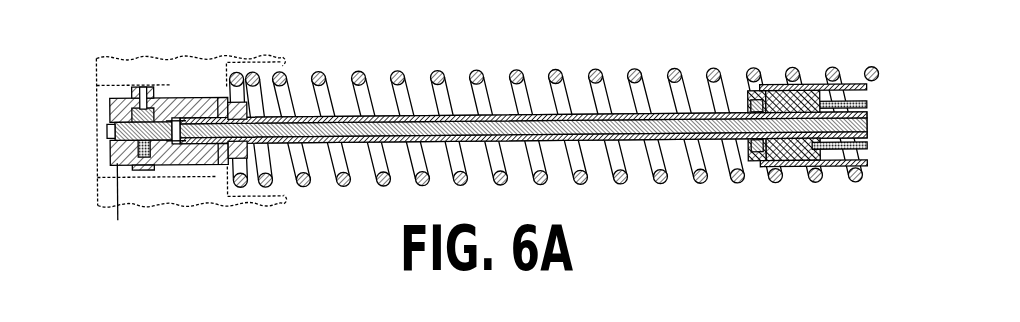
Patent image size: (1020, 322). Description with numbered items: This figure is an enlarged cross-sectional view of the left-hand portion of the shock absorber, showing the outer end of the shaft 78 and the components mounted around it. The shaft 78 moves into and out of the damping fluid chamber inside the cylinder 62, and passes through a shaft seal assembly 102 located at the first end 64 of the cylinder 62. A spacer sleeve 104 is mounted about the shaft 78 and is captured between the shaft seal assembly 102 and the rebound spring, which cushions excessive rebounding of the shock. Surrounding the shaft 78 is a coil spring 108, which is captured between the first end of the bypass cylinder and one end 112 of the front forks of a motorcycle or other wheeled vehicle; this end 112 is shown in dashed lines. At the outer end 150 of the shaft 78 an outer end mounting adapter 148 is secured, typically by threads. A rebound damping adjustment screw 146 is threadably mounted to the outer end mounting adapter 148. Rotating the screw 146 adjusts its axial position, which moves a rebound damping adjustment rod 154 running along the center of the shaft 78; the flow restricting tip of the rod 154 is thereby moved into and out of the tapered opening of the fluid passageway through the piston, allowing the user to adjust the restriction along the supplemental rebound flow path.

The cylinder 62 is at (837, 176).
The first end 64 is at (772, 90).
The shaft 78 is at (515, 143).
The shaft seal assembly 102 is at (742, 89).
The spacer sleeve 104 is at (866, 151).
The coil spring 108 is at (358, 67).
The one end of the front forks 112 is at (170, 52).
The rebound damping adjustment screw 146 is at (112, 130).
The outer end mounting adapter 148 is at (162, 159).
The outer end of shaft 150 is at (218, 136).
The rebound damping adjustment rod 154 is at (866, 126).